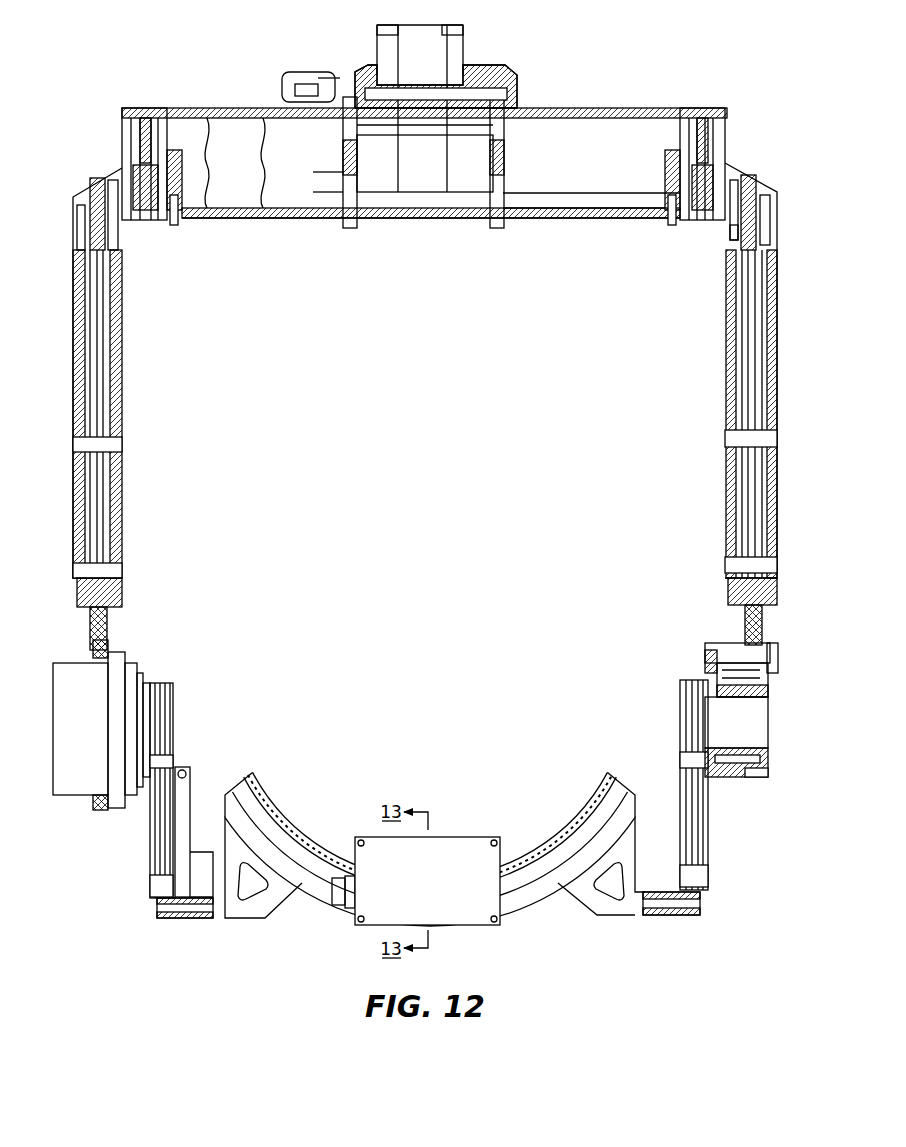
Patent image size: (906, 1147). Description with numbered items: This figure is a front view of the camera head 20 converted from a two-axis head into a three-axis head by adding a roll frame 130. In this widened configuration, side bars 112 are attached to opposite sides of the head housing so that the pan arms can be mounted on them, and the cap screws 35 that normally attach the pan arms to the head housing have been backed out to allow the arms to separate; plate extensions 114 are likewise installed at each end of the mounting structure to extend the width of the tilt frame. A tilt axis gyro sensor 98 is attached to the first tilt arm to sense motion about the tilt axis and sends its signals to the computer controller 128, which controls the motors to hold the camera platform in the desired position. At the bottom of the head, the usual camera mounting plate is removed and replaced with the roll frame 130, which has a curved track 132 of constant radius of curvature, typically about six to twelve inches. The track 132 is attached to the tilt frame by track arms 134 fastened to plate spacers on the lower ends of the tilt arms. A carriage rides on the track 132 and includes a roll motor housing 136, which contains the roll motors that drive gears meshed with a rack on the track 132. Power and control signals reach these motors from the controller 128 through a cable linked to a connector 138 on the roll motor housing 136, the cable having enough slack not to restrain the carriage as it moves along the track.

The camera head 20 is at (543, 100).
The side bars 112 is at (107, 200).
The computer controller 128 is at (594, 200).
The cap screws 35 is at (727, 233).
The tilt axis gyro sensor 98 is at (184, 797).
The roll frame 130 is at (434, 862).
The curved track 132 is at (578, 805).
The track arms 134 is at (578, 885).
The roll motor housing 136 is at (388, 908).
The connector 138 is at (332, 868).
The plate extensions 114 is at (188, 920).